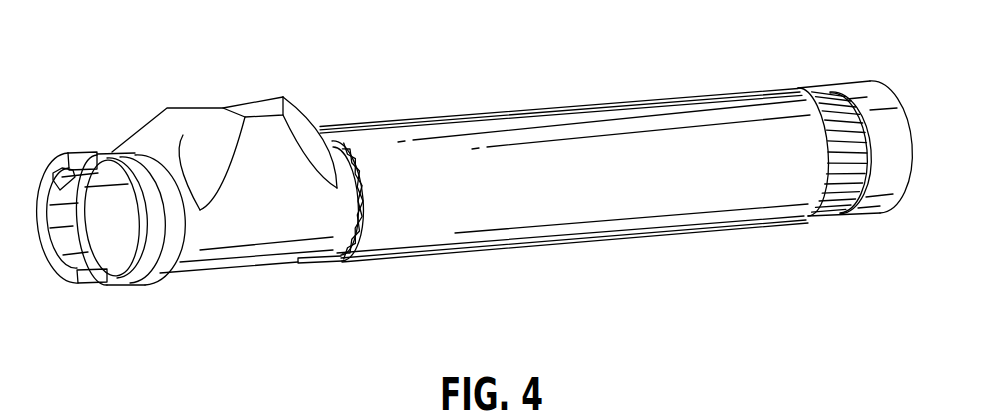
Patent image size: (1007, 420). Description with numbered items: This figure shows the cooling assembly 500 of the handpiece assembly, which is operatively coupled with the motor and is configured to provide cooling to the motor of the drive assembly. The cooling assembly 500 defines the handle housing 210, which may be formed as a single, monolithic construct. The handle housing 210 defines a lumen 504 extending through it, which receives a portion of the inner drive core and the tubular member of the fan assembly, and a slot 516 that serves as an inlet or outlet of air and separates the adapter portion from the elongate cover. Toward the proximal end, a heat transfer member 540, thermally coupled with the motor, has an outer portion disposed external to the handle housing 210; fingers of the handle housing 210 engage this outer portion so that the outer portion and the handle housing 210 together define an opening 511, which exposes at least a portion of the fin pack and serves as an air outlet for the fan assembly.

The cooling assembly 500 is at (496, 46).
The handle housing 210 is at (260, 112).
The lumen 504 is at (107, 233).
The slot 516 is at (333, 267).
The opening 511 is at (808, 92).
The heat transfer member 540 is at (883, 182).